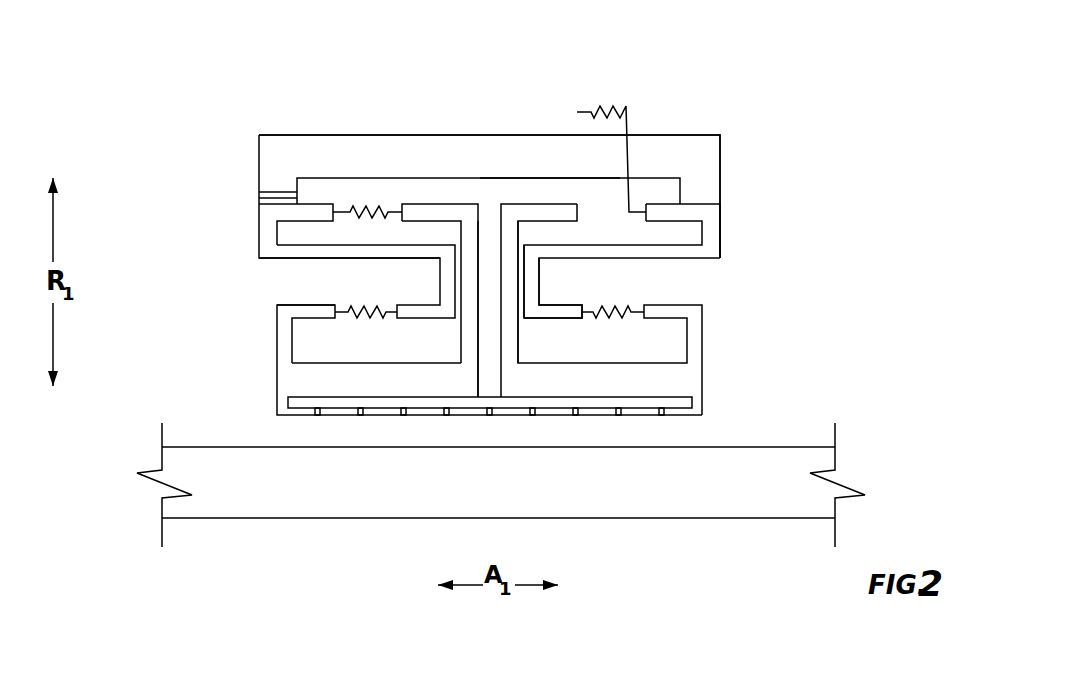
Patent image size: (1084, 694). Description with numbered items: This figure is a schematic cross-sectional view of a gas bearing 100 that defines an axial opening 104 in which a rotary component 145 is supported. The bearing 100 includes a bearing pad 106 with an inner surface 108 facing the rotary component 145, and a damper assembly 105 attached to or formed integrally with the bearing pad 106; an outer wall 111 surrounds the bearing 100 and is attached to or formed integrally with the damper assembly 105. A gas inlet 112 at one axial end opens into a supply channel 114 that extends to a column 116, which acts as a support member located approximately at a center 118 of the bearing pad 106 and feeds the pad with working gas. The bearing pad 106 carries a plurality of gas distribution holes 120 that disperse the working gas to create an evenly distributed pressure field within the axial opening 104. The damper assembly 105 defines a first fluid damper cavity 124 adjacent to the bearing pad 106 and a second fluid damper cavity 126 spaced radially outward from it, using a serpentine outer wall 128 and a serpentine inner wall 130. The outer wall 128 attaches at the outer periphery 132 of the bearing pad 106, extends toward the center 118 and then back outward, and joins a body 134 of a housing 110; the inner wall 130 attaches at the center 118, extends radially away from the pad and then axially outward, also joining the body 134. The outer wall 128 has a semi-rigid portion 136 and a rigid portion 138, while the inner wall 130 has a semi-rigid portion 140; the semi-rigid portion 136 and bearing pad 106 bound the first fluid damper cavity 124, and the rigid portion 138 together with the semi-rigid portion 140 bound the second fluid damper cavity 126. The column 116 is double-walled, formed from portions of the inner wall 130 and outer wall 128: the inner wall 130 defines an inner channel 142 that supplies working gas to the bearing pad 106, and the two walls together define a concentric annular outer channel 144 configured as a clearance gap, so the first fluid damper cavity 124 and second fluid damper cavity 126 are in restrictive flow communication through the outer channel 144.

The gas bearing 100 is at (813, 107).
The axial opening 104 is at (714, 447).
The damper assembly 105 is at (737, 280).
The bearing pad 106 is at (690, 383).
The inner surface 108 is at (642, 425).
The housing 110 is at (601, 133).
The outer wall 111 is at (594, 150).
The gas inlet 112 is at (263, 192).
The supply channel 114 is at (552, 188).
The column 116 is at (560, 278).
The center 118 is at (488, 423).
The gas distribution holes 120 is at (445, 418).
The first fluid damper cavity 124 is at (312, 340).
The second fluid damper cavity 126 is at (297, 235).
The outer wall 128 is at (297, 308).
The inner wall 130 is at (435, 207).
The outer periphery 132 is at (268, 362).
The body 134 is at (710, 212).
The semi-rigid portion 136 is at (353, 298).
The rigid portion 138 is at (345, 257).
The semi-rigid portion 140 is at (353, 202).
The inner channel 142 is at (490, 246).
The outer channel 144 is at (518, 270).
The rotary component 145 is at (822, 466).